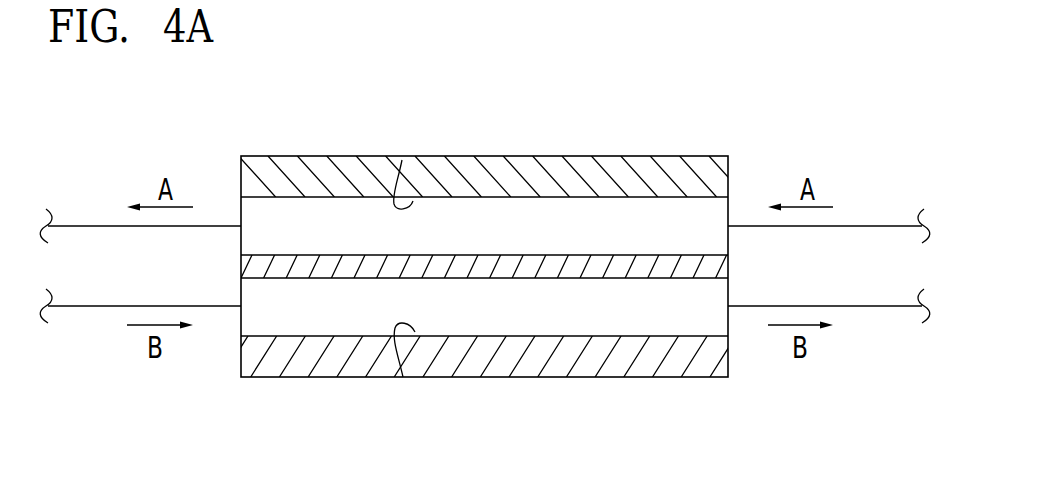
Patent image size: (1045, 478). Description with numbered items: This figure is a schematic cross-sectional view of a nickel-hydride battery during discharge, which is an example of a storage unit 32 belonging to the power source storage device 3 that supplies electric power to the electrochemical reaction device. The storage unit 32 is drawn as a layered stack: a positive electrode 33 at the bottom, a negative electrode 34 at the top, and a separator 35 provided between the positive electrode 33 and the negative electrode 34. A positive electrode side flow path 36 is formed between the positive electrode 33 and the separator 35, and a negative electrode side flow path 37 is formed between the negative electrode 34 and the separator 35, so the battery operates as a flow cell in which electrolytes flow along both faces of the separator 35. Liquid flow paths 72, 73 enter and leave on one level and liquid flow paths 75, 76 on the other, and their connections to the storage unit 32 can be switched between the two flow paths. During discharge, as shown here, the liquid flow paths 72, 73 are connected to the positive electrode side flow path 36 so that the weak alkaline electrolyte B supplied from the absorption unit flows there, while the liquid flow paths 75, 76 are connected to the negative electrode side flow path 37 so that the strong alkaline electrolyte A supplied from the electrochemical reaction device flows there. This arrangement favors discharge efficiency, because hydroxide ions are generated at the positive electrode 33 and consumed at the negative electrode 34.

The power source storage device 3 is at (513, 251).
The storage unit 32 is at (701, 150).
The positive electrode 33 is at (556, 378).
The negative electrode 34 is at (556, 156).
The separator 35 is at (728, 268).
The positive electrode side flow path 36 is at (403, 377).
The negative electrode side flow path 37 is at (402, 160).
The liquid flow path 72 is at (90, 308).
The liquid flow path 73 is at (878, 308).
The liquid flow path 75 is at (878, 226).
The liquid flow path 76 is at (92, 226).